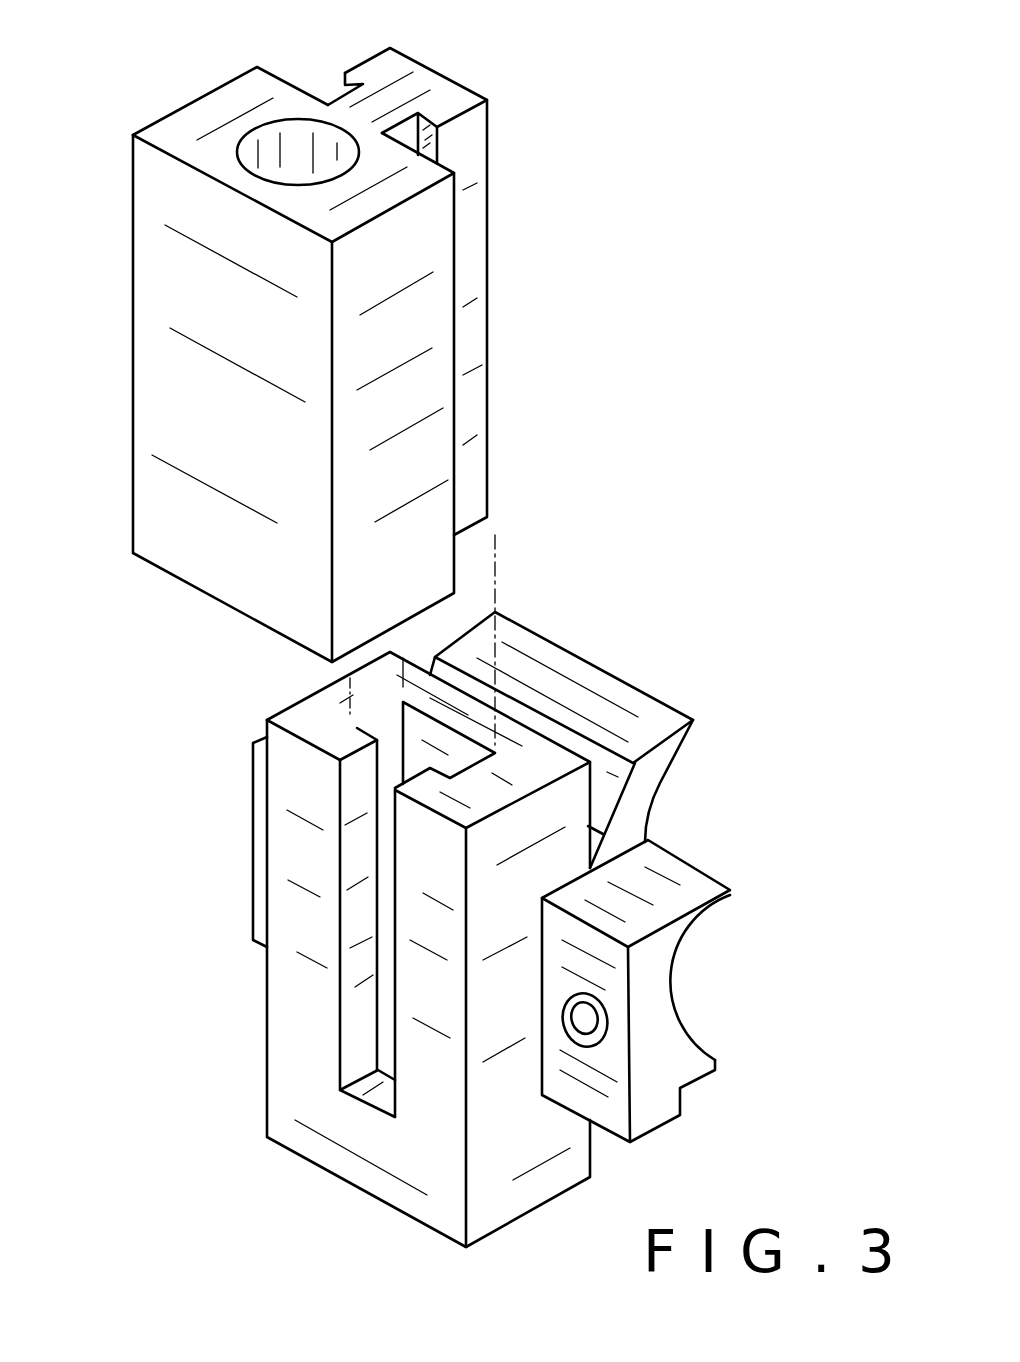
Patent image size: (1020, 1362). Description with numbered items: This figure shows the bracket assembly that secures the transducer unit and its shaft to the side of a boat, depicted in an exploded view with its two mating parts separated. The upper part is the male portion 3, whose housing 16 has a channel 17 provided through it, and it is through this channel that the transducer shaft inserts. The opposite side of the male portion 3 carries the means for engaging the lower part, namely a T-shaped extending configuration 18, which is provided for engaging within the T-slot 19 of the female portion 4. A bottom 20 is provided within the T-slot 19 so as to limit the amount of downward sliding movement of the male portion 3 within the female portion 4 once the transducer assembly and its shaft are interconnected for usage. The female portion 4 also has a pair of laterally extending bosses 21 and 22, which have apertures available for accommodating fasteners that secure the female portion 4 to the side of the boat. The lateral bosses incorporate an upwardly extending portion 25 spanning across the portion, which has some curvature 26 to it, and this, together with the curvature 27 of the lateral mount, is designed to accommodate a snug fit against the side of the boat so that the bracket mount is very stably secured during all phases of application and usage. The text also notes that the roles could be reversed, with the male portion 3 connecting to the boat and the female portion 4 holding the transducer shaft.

The male portion 3 is at (133, 415).
The female portion 4 is at (267, 1030).
The housing 16 is at (447, 160).
The channel 17 is at (270, 140).
The T-shaped extending configuration 18 is at (437, 73).
The T-slot 19 is at (338, 737).
The bottom 20 is at (368, 1097).
The laterally extending boss 21 is at (253, 858).
The laterally extending boss 22 is at (667, 1125).
The upwardly extending portion 25 is at (572, 672).
The curvature 26 is at (684, 772).
The curvature of the lateral mount 27 is at (690, 1052).